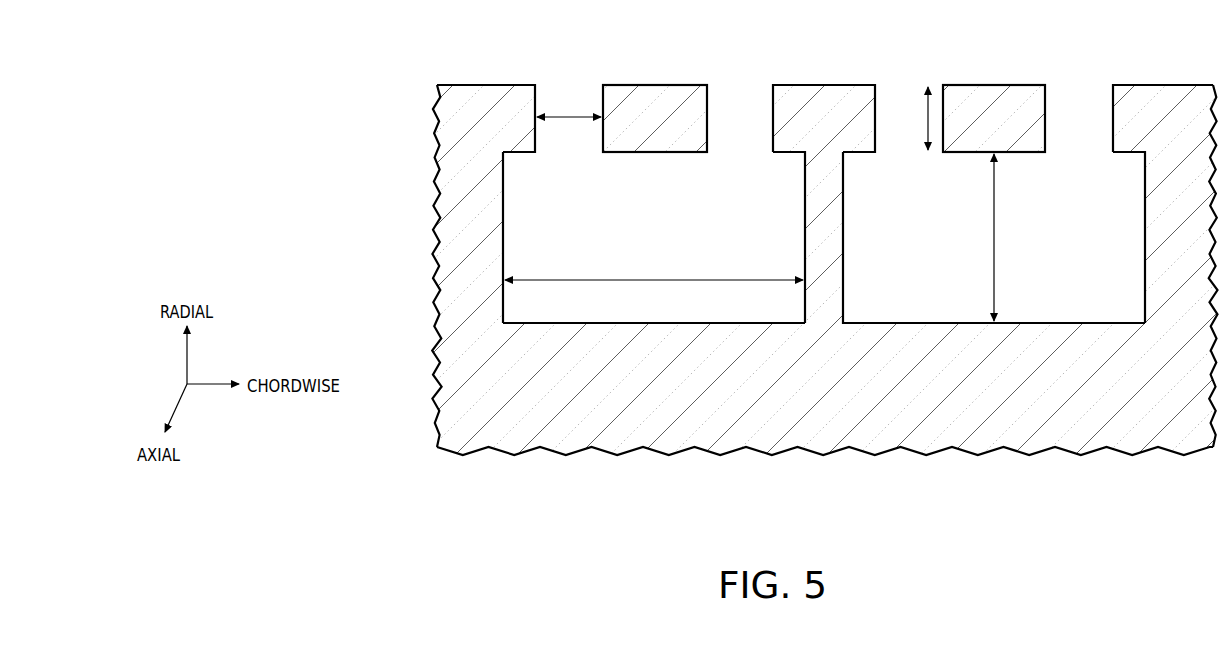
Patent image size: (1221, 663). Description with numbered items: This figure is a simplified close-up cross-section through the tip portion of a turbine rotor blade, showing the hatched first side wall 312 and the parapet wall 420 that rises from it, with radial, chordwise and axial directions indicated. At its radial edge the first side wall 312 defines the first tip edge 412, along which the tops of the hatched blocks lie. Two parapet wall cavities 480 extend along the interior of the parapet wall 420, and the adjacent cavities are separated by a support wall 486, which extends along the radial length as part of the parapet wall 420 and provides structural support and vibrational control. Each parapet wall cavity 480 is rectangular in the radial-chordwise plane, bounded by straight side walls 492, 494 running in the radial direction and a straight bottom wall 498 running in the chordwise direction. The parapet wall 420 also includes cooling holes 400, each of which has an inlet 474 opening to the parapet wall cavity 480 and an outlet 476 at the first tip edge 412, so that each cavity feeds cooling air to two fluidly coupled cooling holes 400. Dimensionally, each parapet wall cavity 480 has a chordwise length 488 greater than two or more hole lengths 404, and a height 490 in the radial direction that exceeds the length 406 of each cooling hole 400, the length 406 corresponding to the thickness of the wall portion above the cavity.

The first side wall 312 is at (443, 398).
The cooling hole 400 is at (567, 93).
The hole length 404 is at (575, 123).
The length (or height) of cooling hole 406 is at (926, 125).
The first tip edge 412 is at (488, 82).
The parapet wall 420 is at (469, 208).
The inlet 474 is at (1072, 142).
The outlet 476 is at (1060, 88).
The parapet wall cavity 480 is at (681, 235).
The support wall 486 is at (804, 210).
The chordwise length 488 is at (640, 279).
The height 490 is at (992, 238).
The side wall 492 is at (505, 210).
The side wall 494 is at (804, 168).
The bottom wall 498 is at (601, 322).